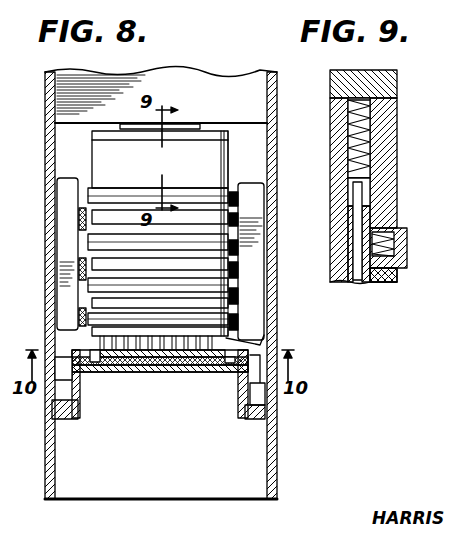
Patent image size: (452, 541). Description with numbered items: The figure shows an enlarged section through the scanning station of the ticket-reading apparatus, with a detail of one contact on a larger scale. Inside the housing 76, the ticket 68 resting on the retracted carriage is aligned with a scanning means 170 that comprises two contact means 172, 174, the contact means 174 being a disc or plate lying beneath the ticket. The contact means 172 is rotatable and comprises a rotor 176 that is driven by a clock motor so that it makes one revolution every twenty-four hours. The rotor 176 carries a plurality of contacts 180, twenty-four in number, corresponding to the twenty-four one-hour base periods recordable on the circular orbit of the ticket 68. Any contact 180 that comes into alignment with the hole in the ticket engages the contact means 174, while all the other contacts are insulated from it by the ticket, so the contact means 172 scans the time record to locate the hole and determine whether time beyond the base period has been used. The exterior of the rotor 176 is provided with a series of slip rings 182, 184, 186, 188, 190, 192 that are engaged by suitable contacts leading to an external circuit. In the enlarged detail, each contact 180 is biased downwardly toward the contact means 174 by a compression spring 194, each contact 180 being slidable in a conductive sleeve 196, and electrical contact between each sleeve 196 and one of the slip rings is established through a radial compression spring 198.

In FIG. 8, the housing 76 is at (247, 111).
In FIG. 8, the ticket 68 is at (92, 347).
In FIG. 8, the scanning means 170 is at (216, 348).
In FIG. 8, the contact means 172 is at (216, 296).
In FIG. 8, the contact means 174 is at (185, 370).
In FIG. 8, the rotor 176 is at (233, 209).
In FIG. 9, the rotor 176 is at (397, 148).
In FIG. 8, the contacts 180 is at (109, 370).
In FIG. 9, the contacts 180 is at (358, 222).
In FIG. 8, the slip ring 182 is at (90, 192).
In FIG. 9, the slip ring 182 is at (407, 248).
In FIG. 8, the slip ring 184 is at (90, 214).
In FIG. 8, the slip ring 186 is at (90, 247).
In FIG. 8, the slip ring 188 is at (85, 270).
In FIG. 8, the slip ring 190 is at (85, 298).
In FIG. 8, the slip ring 192 is at (100, 316).
In FIG. 9, the compression spring 194 is at (380, 126).
In FIG. 9, the conductive sleeve 196 is at (378, 194).
In FIG. 9, the radial compression spring 198 is at (388, 268).